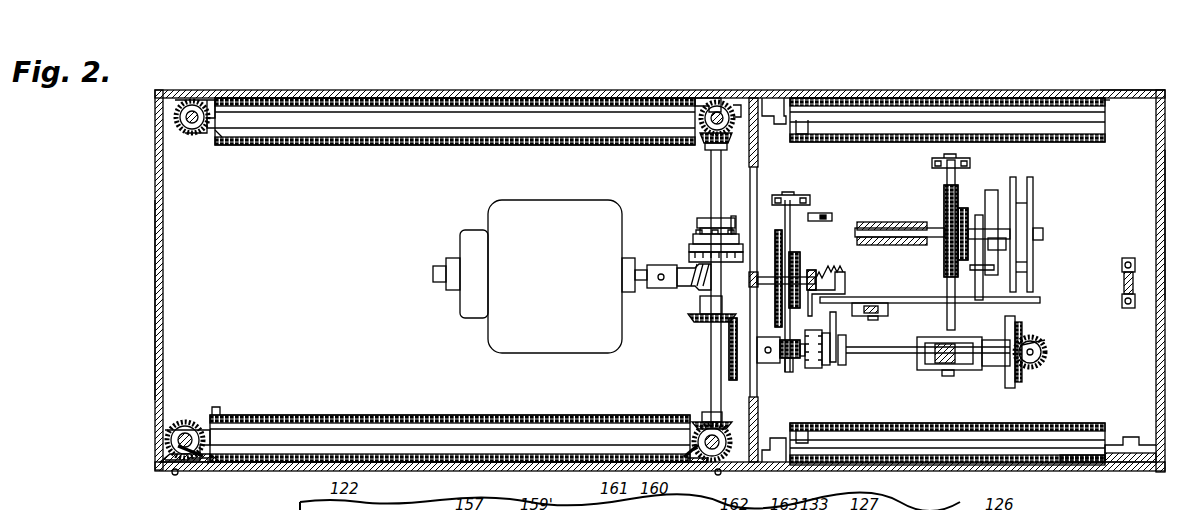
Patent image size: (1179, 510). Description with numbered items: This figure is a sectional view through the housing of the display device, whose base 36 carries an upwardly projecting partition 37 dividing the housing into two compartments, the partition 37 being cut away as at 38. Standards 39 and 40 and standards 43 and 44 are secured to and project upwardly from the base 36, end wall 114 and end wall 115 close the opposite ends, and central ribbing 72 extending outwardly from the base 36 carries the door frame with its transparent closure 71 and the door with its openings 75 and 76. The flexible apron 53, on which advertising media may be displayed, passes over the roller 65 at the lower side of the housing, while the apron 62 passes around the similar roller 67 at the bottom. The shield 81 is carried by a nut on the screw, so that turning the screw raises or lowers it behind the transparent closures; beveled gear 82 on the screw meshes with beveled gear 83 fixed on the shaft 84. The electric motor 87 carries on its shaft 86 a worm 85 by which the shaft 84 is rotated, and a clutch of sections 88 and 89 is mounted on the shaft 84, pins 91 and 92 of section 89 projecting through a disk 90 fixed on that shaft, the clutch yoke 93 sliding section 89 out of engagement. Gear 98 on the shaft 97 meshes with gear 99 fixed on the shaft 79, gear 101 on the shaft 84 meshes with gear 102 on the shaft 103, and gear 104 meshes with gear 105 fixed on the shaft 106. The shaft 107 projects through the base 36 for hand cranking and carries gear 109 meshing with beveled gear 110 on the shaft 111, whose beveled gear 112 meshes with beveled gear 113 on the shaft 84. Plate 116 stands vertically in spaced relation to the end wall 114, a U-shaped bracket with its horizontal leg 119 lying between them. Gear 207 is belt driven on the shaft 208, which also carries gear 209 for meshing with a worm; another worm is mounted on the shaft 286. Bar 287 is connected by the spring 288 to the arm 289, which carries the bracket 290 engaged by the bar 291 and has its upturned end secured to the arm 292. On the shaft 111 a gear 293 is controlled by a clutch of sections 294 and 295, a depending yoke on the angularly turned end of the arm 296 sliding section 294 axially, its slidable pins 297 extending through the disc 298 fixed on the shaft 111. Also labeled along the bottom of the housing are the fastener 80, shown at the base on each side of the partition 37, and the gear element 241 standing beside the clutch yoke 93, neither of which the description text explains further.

The base 36 is at (195, 230).
The partition 37 is at (758, 142).
The cut away portion of partition 38 is at (760, 168).
The standard 39 is at (1158, 92).
The standard 40 is at (775, 102).
The standard 43 is at (718, 102).
The standard 44 is at (204, 100).
The flexible apron 53 is at (967, 125).
The apron 62 is at (1078, 470).
The roller 65 is at (1046, 108).
The roller 67 is at (1042, 455).
The transparent closure 71 is at (1128, 472).
The central ribbing 72 is at (765, 456).
The opening 75 is at (188, 468).
The opening 76 is at (690, 468).
The shaft 79 is at (165, 443).
The screw 80 is at (175, 470).
The shield 81 is at (267, 462).
The beveled gear 82 is at (700, 436).
The beveled gear 83 is at (708, 426).
The shaft 84 is at (711, 368).
The worm 85 is at (690, 290).
The shaft 86 is at (649, 284).
The electric motor 87 is at (528, 210).
The clutch section 88 is at (688, 258).
The clutch section 89 is at (693, 240).
The disk 90 is at (700, 221).
The pin 91 is at (698, 218).
The pin 92 is at (732, 218).
The clutch yoke 93 is at (764, 286).
The shaft 97 is at (220, 420).
The gear 98 is at (214, 424).
The gear 99 is at (193, 420).
The gear 101 is at (702, 144).
The gear 102 is at (736, 107).
The shaft 103 is at (710, 96).
The gear 104 is at (217, 137).
The gear 105 is at (190, 134).
The shaft 106 is at (188, 120).
The shaft 107 is at (1048, 352).
The gear 109 is at (1045, 362).
The beveled gear 110 is at (1010, 380).
The shaft 111 is at (899, 356).
The beveled gear 112 is at (733, 348).
The beveled gear 113 is at (700, 318).
The end wall 114 is at (1156, 205).
The end wall 115 is at (155, 275).
The plate 116 is at (1130, 289).
The leg 119 is at (1129, 306).
The gear 207 is at (963, 198).
The shaft 208 is at (897, 232).
The gear 209 is at (947, 198).
The gear 241 is at (784, 231).
The shaft 286 is at (810, 220).
The bar 287 is at (820, 266).
The spring 288 is at (824, 274).
The arm 289 is at (912, 297).
The bracket 290 is at (886, 308).
The bar 291 is at (878, 316).
The arm 292 is at (983, 295).
The gear 293 is at (794, 370).
The clutch section 294 is at (807, 373).
The clutch section 295 is at (812, 367).
The arm 296 is at (825, 308).
The slidable pin 297 is at (850, 358).
The disc 298 is at (838, 338).